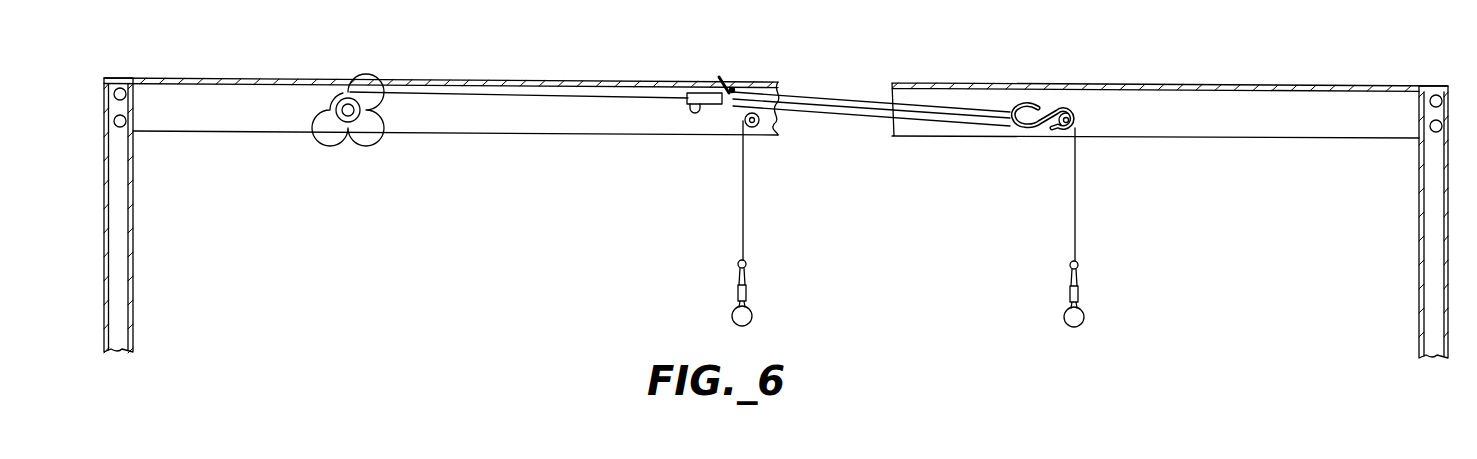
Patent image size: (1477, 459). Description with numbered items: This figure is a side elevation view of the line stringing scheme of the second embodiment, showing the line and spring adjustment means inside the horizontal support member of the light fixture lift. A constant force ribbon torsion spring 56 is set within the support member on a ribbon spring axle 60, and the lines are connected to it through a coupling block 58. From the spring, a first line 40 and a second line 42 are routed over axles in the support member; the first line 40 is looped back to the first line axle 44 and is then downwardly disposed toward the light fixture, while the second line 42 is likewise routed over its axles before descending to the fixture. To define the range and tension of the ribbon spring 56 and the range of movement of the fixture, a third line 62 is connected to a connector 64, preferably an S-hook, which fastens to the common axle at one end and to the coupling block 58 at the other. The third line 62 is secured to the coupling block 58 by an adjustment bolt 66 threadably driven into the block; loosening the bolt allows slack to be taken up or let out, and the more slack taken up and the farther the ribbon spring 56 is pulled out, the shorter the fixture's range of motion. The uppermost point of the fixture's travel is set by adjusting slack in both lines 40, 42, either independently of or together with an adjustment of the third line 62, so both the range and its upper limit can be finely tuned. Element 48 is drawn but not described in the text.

The first line 40 is at (853, 99).
The second line 42 is at (1075, 235).
The first line axle 44 is at (753, 127).
The S-hook connector 48 is at (1058, 126).
The constant force ribbon torsion spring 56 is at (347, 100).
The coupling block 58 is at (700, 93).
The ribbon spring axle 60 is at (349, 116).
The third line 62 is at (800, 108).
The connector 64 is at (1065, 112).
The adjustment bolt 66 is at (733, 90).